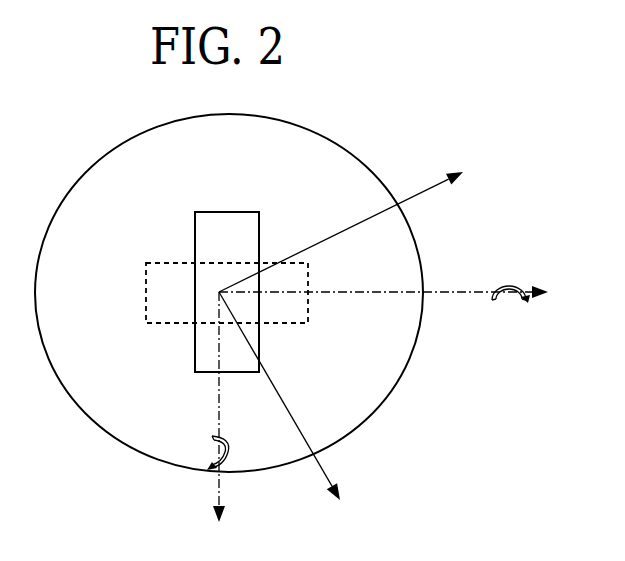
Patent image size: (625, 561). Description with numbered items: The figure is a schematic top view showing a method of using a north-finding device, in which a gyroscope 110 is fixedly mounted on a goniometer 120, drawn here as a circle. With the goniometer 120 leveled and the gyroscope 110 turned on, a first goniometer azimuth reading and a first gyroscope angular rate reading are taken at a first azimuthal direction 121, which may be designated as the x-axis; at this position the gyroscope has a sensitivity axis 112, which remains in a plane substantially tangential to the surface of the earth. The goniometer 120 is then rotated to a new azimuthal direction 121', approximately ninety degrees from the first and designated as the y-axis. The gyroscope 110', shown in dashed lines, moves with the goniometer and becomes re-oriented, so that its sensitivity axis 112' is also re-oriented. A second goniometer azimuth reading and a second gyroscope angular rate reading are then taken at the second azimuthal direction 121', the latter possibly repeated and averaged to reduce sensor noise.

The goniometer 120 is at (95, 154).
The gyroscope 110 is at (203, 268).
The gyroscope (re-oriented) 110' is at (202, 268).
The sensitivity axis 112 is at (383, 274).
The sensitivity axis (re-oriented) 112' is at (248, 412).
The first azimuthal direction 121 is at (358, 232).
The second azimuthal direction 121' is at (322, 396).